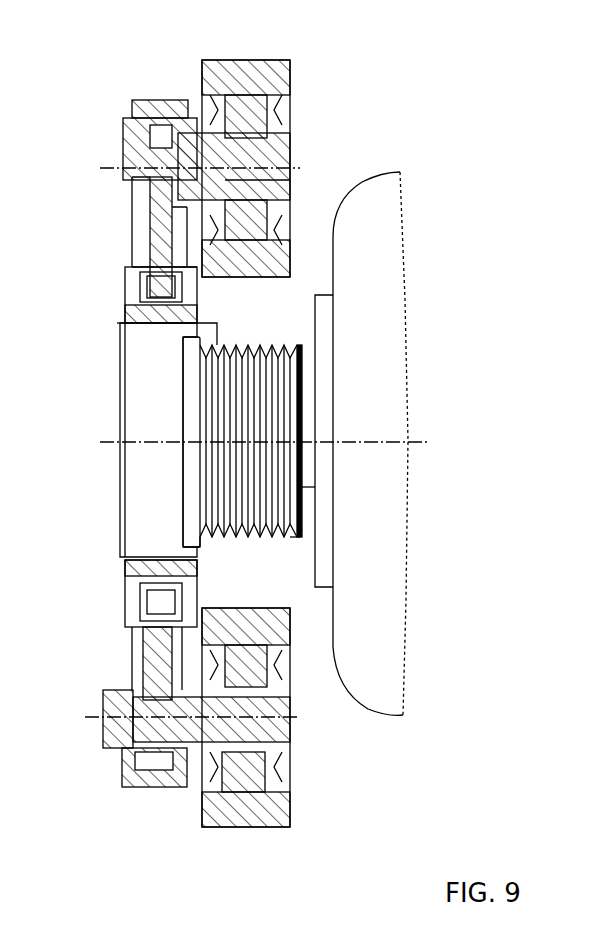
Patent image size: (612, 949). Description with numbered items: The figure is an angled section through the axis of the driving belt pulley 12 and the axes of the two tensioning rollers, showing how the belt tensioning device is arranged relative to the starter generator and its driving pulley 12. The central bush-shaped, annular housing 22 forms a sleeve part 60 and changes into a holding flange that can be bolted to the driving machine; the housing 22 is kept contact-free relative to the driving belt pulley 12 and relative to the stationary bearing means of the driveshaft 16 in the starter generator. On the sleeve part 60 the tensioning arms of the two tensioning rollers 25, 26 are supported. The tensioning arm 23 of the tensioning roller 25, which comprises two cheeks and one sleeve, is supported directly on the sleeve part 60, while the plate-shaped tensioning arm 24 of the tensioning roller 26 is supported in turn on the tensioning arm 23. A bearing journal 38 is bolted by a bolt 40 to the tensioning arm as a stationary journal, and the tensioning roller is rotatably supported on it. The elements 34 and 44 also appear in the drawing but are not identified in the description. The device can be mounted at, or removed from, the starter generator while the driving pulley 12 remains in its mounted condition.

The driving belt pulley 12 is at (223, 405).
The driveshaft 16 is at (307, 405).
The housing 22 is at (96, 292).
The tensioning arm 23 is at (65, 760).
The tensioning arm 24 is at (100, 206).
The tensioning roller 25 is at (217, 826).
The tensioning roller 26 is at (226, 58).
The wheel disc 34 is at (383, 175).
The bearing journal 38 is at (283, 134).
The bolt 40 is at (110, 712).
The upper bolt 44 is at (148, 168).
The sleeve part 60 is at (122, 325).